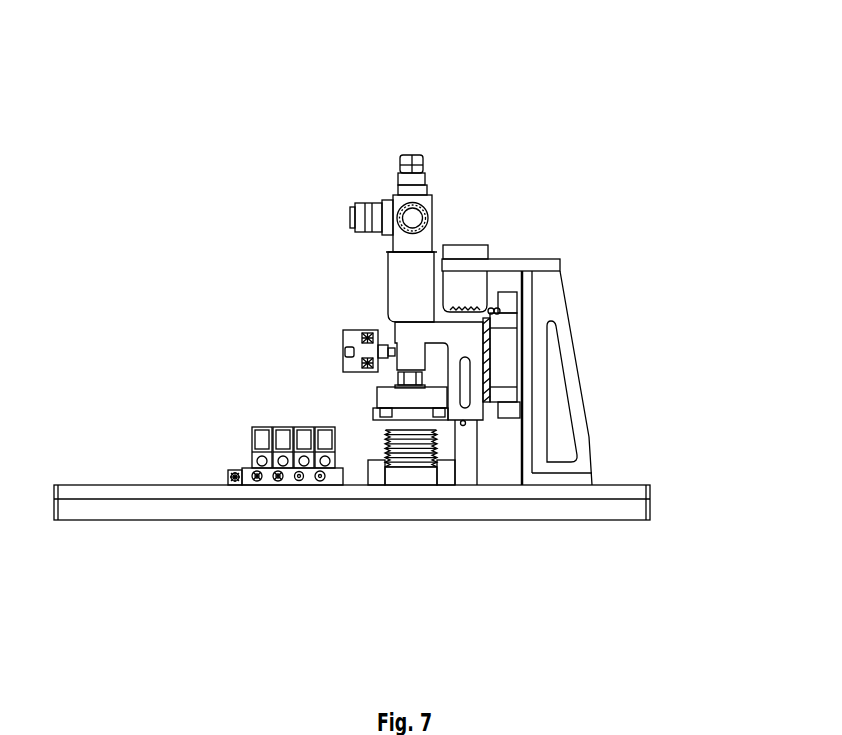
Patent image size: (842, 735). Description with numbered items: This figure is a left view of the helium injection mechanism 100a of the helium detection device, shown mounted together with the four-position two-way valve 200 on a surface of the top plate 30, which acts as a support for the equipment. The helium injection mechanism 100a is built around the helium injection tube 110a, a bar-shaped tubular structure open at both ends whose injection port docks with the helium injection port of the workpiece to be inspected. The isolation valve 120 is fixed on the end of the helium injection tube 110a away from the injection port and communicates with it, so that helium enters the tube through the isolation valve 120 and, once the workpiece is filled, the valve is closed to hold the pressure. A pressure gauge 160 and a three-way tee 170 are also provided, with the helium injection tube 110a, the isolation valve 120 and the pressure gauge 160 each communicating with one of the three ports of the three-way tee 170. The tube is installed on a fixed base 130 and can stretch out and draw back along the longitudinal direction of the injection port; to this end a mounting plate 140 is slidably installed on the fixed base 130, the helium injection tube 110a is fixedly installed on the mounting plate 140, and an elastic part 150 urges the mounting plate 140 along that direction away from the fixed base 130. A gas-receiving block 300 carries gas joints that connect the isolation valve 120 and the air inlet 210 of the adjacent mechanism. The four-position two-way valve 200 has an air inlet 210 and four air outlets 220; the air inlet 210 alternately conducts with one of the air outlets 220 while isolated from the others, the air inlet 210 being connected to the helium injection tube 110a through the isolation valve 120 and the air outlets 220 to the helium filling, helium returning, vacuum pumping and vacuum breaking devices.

The helium injection mechanism 100a is at (105, 49).
The top plate 30 is at (623, 506).
The fixed base 130 is at (472, 265).
The elastic part 150 is at (486, 312).
The gas-receiving block 300 is at (402, 200).
The isolation valve 120 is at (396, 273).
The three-way tee 170 is at (405, 353).
The pressure gauge 160 is at (352, 360).
The mounting plate 140 is at (392, 398).
The helium injection tube 110a is at (413, 472).
The four-position two-way valve 200 is at (270, 478).
The air outlets 220 is at (300, 478).
The air inlet 210 is at (230, 478).